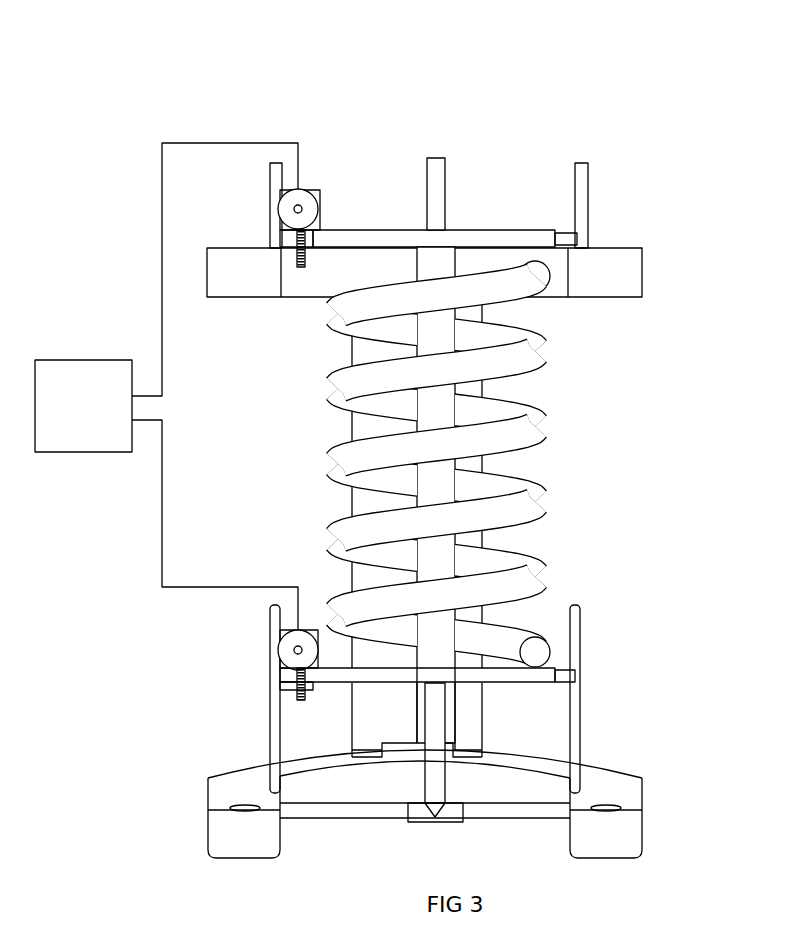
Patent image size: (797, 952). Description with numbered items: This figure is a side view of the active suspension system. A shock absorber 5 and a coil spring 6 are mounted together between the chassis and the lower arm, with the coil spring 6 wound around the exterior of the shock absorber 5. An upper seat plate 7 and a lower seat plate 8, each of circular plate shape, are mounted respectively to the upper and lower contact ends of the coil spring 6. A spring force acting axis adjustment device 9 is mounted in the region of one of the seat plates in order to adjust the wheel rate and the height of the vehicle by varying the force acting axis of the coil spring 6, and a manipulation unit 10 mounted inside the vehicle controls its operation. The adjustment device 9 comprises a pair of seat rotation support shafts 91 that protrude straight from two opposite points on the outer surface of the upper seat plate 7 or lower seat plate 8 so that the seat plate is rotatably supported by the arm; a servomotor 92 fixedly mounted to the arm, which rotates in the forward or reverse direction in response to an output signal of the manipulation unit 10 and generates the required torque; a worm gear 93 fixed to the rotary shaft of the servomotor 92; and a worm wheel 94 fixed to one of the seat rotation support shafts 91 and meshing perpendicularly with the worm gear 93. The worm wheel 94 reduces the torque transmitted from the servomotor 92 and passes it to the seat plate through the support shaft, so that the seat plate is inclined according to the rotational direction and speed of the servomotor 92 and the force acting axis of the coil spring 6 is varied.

The shock absorber 5 is at (437, 398).
The coil spring 6 is at (527, 503).
The upper seat plate 7 is at (511, 232).
The lower seat plate 8 is at (382, 675).
The spring force acting axis adjustment device 9 is at (418, 50).
The seat rotation support shafts 91 is at (280, 230).
The servomotor 92 is at (303, 190).
The worm gear 93 is at (300, 208).
The worm wheel 94 is at (307, 262).
The manipulation unit 10 is at (70, 386).